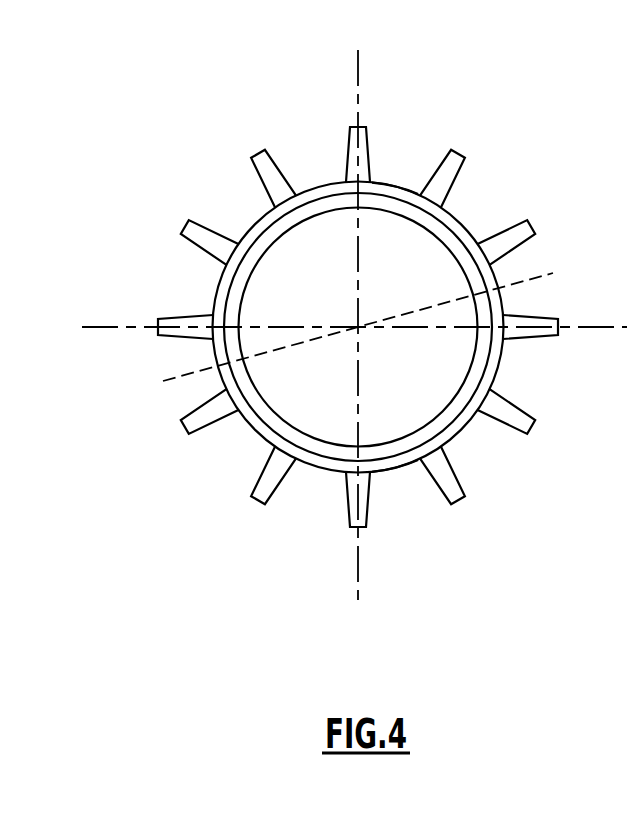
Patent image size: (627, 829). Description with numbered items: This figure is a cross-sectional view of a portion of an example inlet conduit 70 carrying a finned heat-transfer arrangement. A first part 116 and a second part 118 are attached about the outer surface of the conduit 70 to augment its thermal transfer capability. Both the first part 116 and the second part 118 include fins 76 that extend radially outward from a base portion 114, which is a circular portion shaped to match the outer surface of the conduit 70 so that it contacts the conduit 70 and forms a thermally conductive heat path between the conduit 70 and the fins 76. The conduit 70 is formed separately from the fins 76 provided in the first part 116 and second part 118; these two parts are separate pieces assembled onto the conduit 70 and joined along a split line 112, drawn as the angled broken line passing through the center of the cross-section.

The inlet conduit 70 is at (330, 448).
The fins 76 is at (276, 145).
The split line 112 is at (178, 388).
The base portion 114 is at (324, 190).
The first part 116 is at (398, 168).
The second part 118 is at (404, 482).